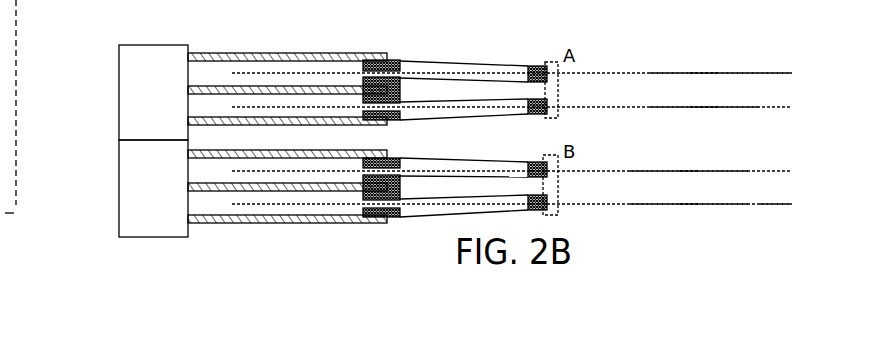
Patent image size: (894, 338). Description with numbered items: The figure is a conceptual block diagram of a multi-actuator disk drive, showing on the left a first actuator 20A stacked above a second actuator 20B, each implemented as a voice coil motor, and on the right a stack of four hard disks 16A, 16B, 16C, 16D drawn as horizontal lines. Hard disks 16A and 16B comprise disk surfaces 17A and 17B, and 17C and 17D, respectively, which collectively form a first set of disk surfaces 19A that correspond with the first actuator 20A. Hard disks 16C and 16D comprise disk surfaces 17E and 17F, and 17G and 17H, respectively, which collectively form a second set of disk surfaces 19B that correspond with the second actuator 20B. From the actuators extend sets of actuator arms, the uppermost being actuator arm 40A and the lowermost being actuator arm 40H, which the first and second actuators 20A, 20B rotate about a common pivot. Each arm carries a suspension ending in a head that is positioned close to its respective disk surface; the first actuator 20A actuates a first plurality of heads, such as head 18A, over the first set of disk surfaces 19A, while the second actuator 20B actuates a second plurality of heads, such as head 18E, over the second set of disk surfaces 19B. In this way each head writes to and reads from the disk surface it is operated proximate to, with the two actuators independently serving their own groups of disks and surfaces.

The hard disk 16A is at (803, 73).
The hard disk 16B is at (803, 107).
The hard disk 16C is at (803, 171).
The hard disk 16D is at (803, 204).
The disk surface 17A is at (703, 73).
The disk surface 17B is at (687, 74).
The disk surface 17C is at (703, 107).
The disk surface 17D is at (687, 108).
The disk surface 17E is at (690, 171).
The disk surface 17F is at (673, 172).
The disk surface 17G is at (690, 204).
The disk surface 17H is at (673, 205).
The head 18A is at (530, 58).
The head 18E is at (530, 156).
The first set of disk surfaces 19A is at (786, 57).
The second set of disk surfaces 19B is at (778, 215).
The first actuator 20A is at (119, 81).
The second actuator 20B is at (119, 183).
The actuator arm 40A is at (270, 53).
The actuator arm 40H is at (258, 224).